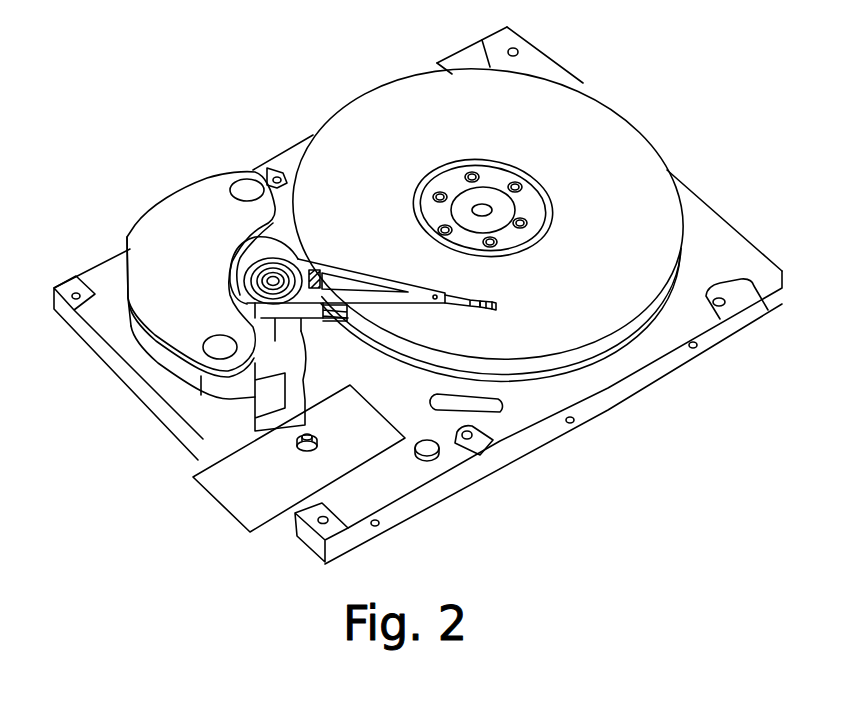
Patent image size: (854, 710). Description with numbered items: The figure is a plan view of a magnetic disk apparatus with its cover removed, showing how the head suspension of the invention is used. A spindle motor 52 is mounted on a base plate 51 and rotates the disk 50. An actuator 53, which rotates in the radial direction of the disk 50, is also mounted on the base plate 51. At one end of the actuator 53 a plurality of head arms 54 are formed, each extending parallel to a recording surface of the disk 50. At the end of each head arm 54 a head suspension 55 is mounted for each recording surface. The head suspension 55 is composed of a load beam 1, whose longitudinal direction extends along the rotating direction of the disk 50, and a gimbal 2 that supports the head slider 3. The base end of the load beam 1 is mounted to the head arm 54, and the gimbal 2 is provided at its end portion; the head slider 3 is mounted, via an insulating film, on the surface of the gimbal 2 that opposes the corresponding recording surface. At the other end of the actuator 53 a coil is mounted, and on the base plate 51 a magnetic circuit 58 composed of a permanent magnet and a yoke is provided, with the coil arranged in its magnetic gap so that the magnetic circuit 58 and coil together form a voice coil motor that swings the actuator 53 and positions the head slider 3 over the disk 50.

The load beam 1 is at (457, 312).
The gimbal 2 is at (493, 303).
The head slider 3 is at (497, 307).
The disk 50 is at (593, 120).
The base plate 51 is at (730, 328).
The spindle motor 52 is at (465, 203).
The actuator 53 is at (276, 220).
The head arm 54 is at (316, 263).
The head suspension 55 is at (477, 300).
The magnetic circuit 58 is at (180, 190).